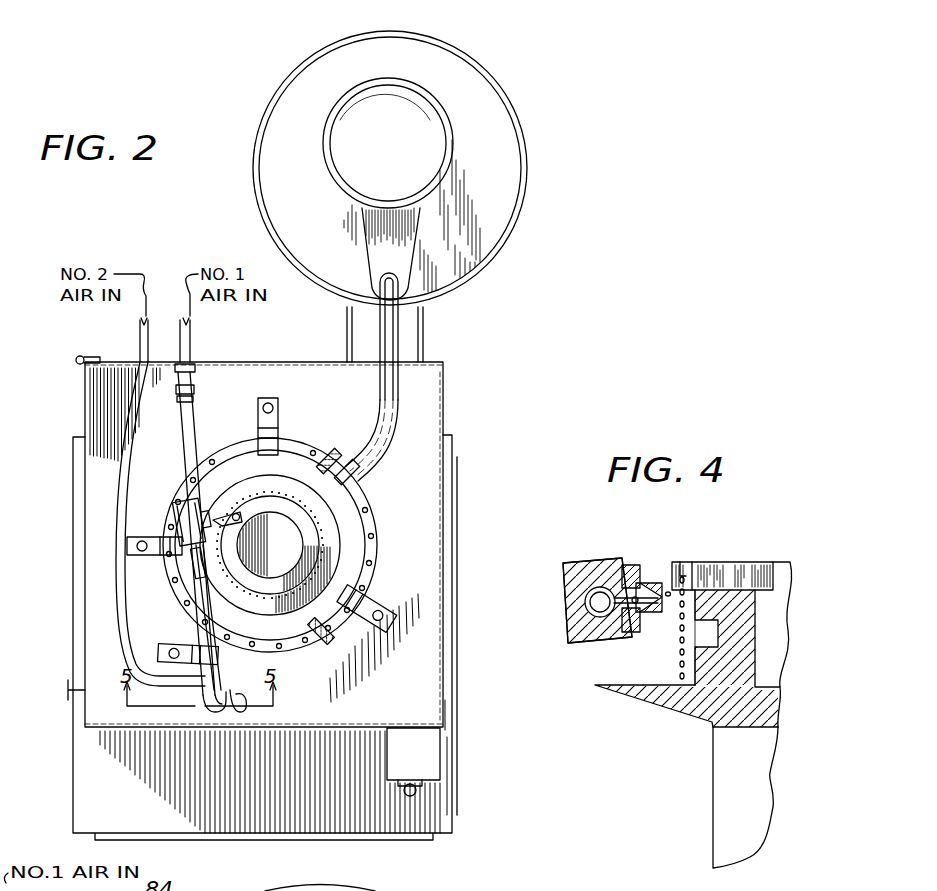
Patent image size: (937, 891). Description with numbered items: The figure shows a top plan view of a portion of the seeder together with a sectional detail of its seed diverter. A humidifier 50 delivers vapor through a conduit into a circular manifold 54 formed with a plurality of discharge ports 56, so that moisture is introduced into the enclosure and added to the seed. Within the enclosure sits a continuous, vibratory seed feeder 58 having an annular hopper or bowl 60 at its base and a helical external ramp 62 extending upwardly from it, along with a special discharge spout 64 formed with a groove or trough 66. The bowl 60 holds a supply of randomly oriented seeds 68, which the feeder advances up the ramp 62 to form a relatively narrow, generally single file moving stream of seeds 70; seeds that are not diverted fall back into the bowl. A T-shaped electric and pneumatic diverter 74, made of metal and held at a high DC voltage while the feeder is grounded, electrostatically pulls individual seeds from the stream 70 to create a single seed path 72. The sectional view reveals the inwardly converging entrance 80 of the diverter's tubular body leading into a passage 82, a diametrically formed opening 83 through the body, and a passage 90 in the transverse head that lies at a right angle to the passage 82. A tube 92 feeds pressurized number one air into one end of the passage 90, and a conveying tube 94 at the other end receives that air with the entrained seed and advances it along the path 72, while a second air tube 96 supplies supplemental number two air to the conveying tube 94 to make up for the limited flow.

In FIG. 2, the humidifier 50 is at (496, 80).
In FIG. 2, the circular manifold 54 is at (362, 482).
In FIG. 2, the discharge ports 56 is at (378, 526).
In FIG. 4, the continuous seed feeder 58 is at (700, 805).
In FIG. 2, the annular hopper or bowl 60 is at (282, 476).
In FIG. 4, the annular hopper or bowl 60 is at (650, 701).
In FIG. 4, the helical external ramp 62 is at (720, 632).
In FIG. 4, the discharge spout 64 is at (748, 562).
In FIG. 4, the groove or trough 66 is at (690, 562).
In FIG. 2, the supply of randomly oriented seeds 68 is at (320, 632).
In FIG. 4, the moving stream of seeds 70 is at (678, 647).
In FIG. 4, the single seed path 72 is at (668, 577).
In FIG. 2, the T-shaped electric and pneumatic diverter 74 is at (184, 520).
In FIG. 4, the T-shaped electric and pneumatic diverter 74 is at (571, 548).
In FIG. 4, the converging entrance 80 is at (649, 580).
In FIG. 4, the passage 82 is at (624, 567).
In FIG. 4, the diametrically formed opening 83 is at (620, 628).
In FIG. 4, the passage 90 is at (586, 602).
In FIG. 2, the tube 92 is at (184, 458).
In FIG. 2, the conveying tube 94 is at (200, 583).
In FIG. 2, the second air tube 96 is at (116, 592).